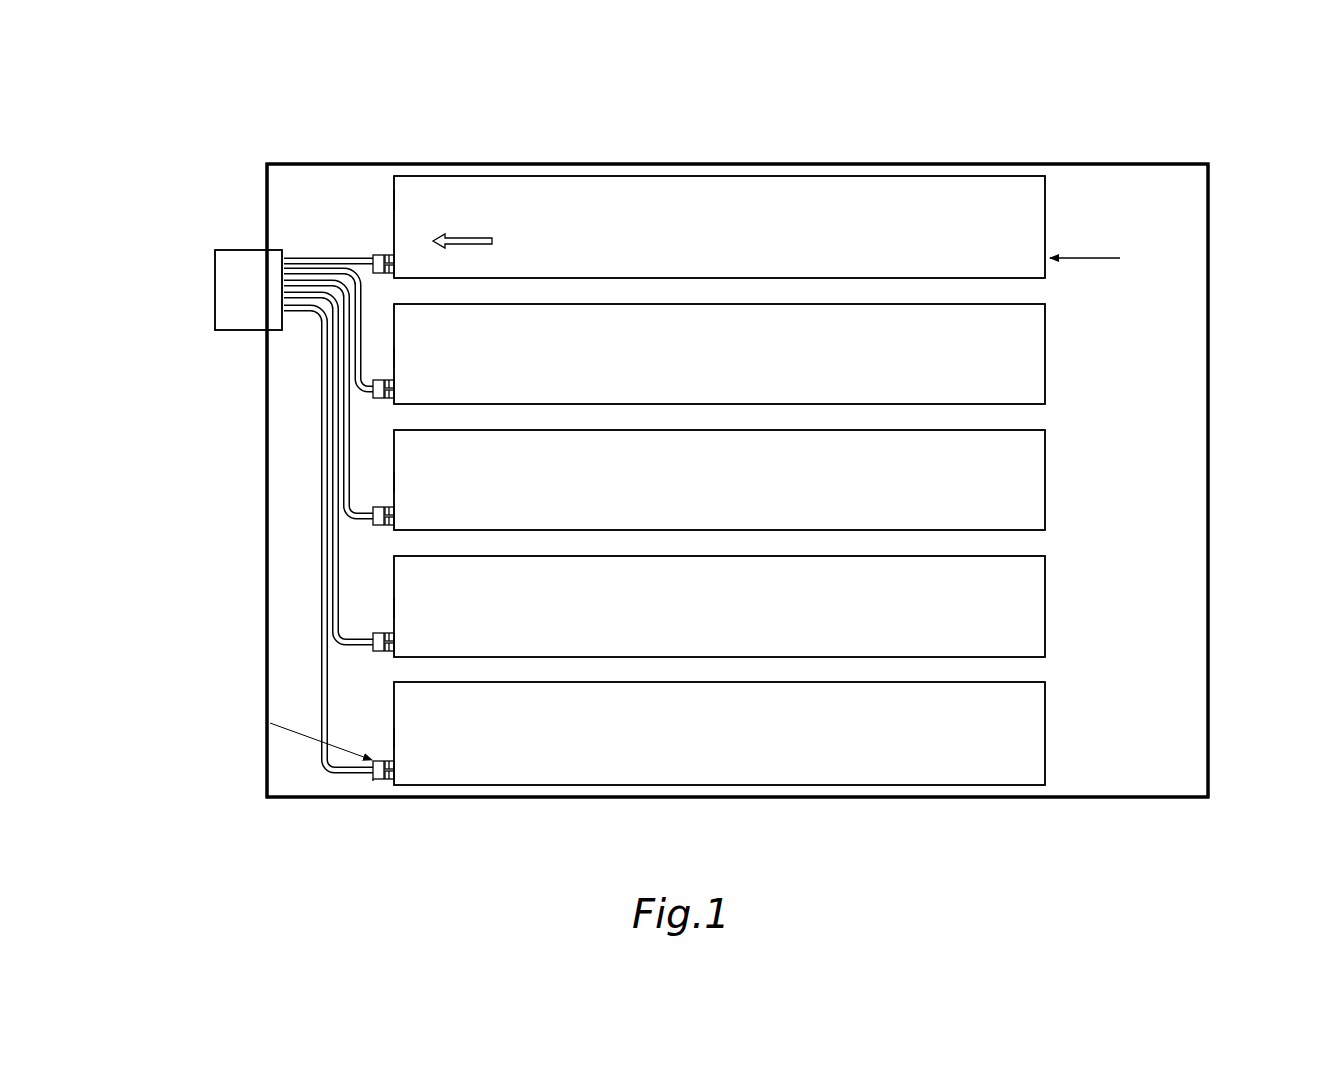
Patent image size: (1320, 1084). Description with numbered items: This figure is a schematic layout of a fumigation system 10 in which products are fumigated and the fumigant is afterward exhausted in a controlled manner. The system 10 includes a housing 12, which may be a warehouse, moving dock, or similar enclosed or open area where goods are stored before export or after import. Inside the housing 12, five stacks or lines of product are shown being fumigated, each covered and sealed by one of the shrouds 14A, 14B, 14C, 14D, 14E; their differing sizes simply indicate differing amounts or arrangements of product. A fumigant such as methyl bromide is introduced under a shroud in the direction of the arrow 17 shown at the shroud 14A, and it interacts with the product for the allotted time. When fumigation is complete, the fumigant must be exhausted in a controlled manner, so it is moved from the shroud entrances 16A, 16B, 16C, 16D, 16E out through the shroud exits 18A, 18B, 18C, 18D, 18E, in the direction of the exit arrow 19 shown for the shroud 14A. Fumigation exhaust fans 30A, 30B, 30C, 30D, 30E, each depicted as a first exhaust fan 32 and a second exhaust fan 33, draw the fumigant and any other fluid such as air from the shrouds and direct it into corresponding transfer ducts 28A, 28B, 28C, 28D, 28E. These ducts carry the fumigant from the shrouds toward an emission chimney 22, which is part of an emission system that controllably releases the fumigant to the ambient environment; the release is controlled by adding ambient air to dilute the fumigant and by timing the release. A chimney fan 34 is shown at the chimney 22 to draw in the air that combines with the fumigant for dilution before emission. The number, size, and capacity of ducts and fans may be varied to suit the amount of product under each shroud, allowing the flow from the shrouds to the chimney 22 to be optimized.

The fumigation system 10 is at (285, 92).
The housing 12 is at (1212, 218).
The shroud 14A is at (1047, 236).
The shroud 14B is at (1047, 366).
The shroud 14C is at (1047, 486).
The shroud 14D is at (1047, 628).
The shroud 14E is at (1047, 745).
The shroud entrance 16A is at (1047, 200).
The shroud entrance 16B is at (1047, 331).
The shroud entrance 16C is at (1047, 452).
The shroud entrance 16D is at (1047, 592).
The shroud entrance 16E is at (1047, 712).
The arrow 17 is at (1095, 260).
The shroud exit 18A is at (396, 200).
The shroud exit 18B is at (396, 357).
The shroud exit 18C is at (396, 482).
The shroud exit 18D is at (396, 608).
The shroud exit 18E is at (396, 738).
The exit arrow 19 is at (477, 243).
The emission chimney 22 is at (240, 332).
The transfer duct 28A is at (302, 256).
The transfer duct 28B is at (364, 340).
The transfer duct 28C is at (352, 466).
The transfer duct 28D is at (341, 592).
The transfer duct 28E is at (330, 716).
The fumigation exhaust fan 30A is at (388, 254).
The fumigation exhaust fan 30B is at (398, 386).
The fumigation exhaust fan 30C is at (398, 512).
The fumigation exhaust fan 30D is at (398, 640).
The fumigation exhaust fan 30E is at (398, 765).
The first exhaust fan 32 is at (268, 722).
The second exhaust fan 33 is at (375, 782).
The chimney fan 34 is at (222, 283).